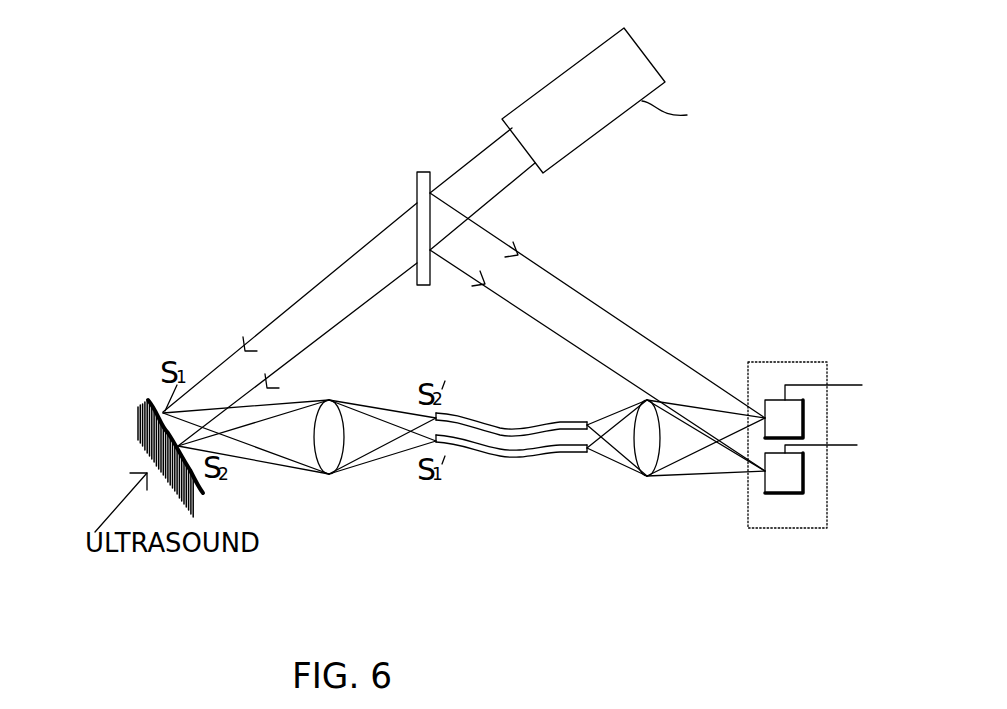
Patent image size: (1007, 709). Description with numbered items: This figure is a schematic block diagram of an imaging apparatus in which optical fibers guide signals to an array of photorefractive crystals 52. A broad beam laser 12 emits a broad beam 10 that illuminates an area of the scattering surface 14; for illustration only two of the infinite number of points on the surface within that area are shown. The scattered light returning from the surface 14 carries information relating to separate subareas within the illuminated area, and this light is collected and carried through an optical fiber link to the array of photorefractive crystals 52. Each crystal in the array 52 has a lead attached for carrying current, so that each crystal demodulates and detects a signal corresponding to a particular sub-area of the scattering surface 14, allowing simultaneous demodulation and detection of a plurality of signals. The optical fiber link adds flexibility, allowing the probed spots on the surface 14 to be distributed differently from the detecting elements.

The broad beam 10 is at (257, 332).
The broad beam laser 12 is at (527, 100).
The scattering surface 14 is at (138, 405).
The array of photorefractive crystals 52 is at (795, 362).